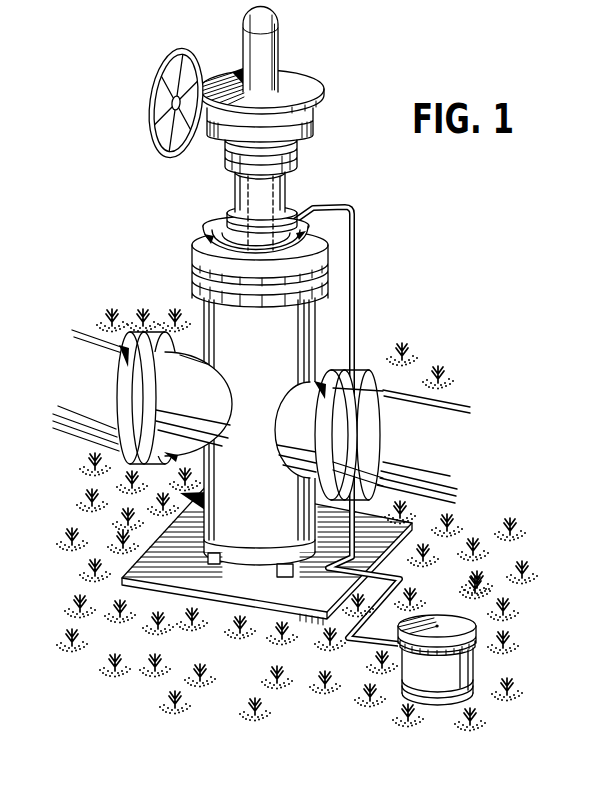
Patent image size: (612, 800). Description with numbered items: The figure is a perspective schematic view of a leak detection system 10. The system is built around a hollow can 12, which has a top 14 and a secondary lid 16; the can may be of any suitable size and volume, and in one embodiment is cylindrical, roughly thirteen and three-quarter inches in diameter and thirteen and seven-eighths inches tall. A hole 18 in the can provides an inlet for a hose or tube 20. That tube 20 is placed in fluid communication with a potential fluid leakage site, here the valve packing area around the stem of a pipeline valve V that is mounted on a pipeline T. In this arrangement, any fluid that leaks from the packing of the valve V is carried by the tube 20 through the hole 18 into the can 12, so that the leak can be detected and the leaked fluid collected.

The leak detection system 10 is at (464, 677).
The hollow can 12 is at (465, 667).
The top 14 is at (472, 644).
The secondary lid 16 is at (450, 622).
The hole 18 is at (402, 686).
The hose or tube 20 is at (350, 640).
The pipeline valve V is at (193, 281).
The pipeline T is at (88, 336).